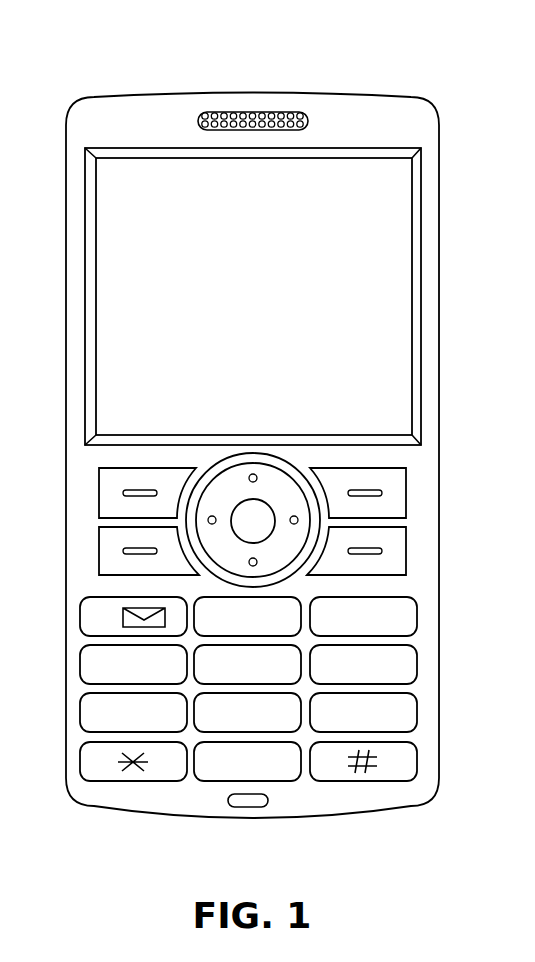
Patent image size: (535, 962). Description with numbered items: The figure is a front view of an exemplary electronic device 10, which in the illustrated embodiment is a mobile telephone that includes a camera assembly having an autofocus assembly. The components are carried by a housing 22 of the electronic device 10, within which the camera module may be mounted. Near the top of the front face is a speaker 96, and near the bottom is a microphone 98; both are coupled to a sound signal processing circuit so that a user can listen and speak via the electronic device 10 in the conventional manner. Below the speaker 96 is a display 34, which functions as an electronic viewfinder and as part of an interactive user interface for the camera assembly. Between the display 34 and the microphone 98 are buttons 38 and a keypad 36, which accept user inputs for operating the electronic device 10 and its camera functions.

The electronic device 10 is at (80, 80).
The housing 22 is at (365, 798).
The speaker 96 is at (253, 112).
The display 34 is at (112, 282).
The buttons 38 is at (424, 521).
The keypad 36 is at (156, 795).
The microphone 98 is at (255, 804).